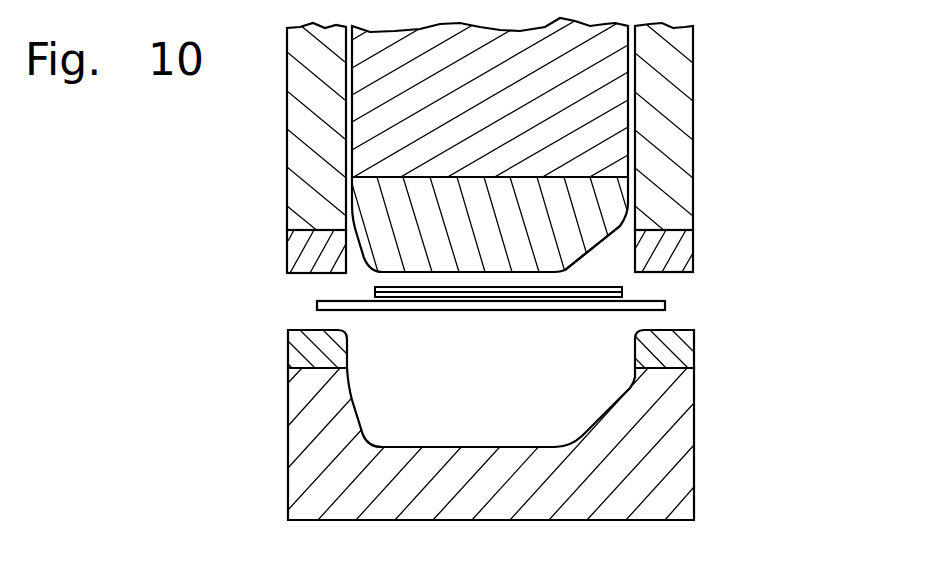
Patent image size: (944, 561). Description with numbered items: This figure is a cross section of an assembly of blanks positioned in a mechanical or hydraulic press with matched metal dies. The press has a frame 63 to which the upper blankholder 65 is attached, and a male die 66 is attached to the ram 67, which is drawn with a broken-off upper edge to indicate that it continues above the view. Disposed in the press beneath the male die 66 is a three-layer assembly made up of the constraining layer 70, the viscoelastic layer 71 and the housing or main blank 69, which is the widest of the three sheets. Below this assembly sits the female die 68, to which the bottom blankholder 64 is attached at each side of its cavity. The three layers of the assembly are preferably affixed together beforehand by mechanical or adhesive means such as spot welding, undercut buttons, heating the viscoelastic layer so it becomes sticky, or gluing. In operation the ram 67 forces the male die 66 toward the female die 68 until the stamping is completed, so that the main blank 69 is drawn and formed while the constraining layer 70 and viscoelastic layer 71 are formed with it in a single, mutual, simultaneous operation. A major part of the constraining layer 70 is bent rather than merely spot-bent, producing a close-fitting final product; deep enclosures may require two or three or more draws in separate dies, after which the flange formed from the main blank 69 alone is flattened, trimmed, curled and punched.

The frame 63 is at (694, 108).
The bottom blankholder 64 is at (686, 355).
The upper blankholder 65 is at (683, 247).
The male die 66 is at (588, 243).
The ram 67 is at (353, 132).
The female die 68 is at (638, 430).
The main blank 69 is at (665, 303).
The constraining layer 70 is at (375, 288).
The viscoelastic layer 71 is at (375, 294).